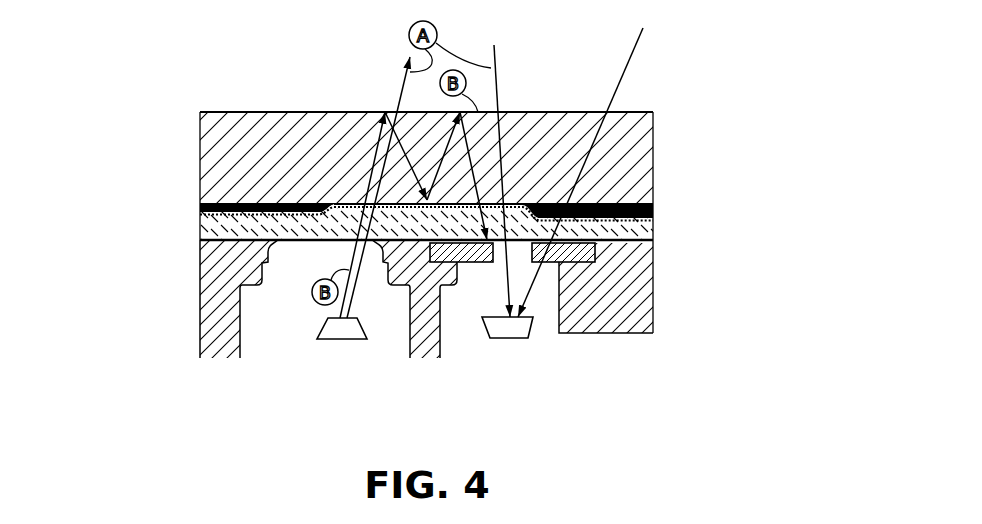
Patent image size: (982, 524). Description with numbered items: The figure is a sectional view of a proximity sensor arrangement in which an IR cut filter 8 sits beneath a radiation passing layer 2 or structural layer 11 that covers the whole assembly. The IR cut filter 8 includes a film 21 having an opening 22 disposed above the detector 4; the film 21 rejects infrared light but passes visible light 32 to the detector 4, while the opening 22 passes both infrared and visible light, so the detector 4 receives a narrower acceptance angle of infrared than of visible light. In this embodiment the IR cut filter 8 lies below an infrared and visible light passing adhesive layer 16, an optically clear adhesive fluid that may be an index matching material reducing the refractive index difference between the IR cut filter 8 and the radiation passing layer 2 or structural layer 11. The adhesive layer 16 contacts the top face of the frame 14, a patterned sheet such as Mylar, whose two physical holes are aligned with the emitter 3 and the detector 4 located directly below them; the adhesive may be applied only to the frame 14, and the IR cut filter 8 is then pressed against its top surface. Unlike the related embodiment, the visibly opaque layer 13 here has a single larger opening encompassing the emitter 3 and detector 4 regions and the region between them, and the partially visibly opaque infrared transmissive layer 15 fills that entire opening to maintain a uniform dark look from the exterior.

The radiation passing layer 2 is at (426, 188).
The structural layer 11 is at (545, 112).
The opening 22 is at (522, 112).
The visibly opaque layer 13 is at (653, 210).
The adhesive layer 16 is at (200, 202).
The partially visibly opaque infrared transmissive layer 15 is at (653, 219).
The IR cut filter 8 is at (196, 225).
The frame 14 is at (205, 262).
The film 21 is at (544, 262).
The emitter 3 is at (346, 340).
The detector 4 is at (522, 338).
The visible light 32 is at (638, 38).